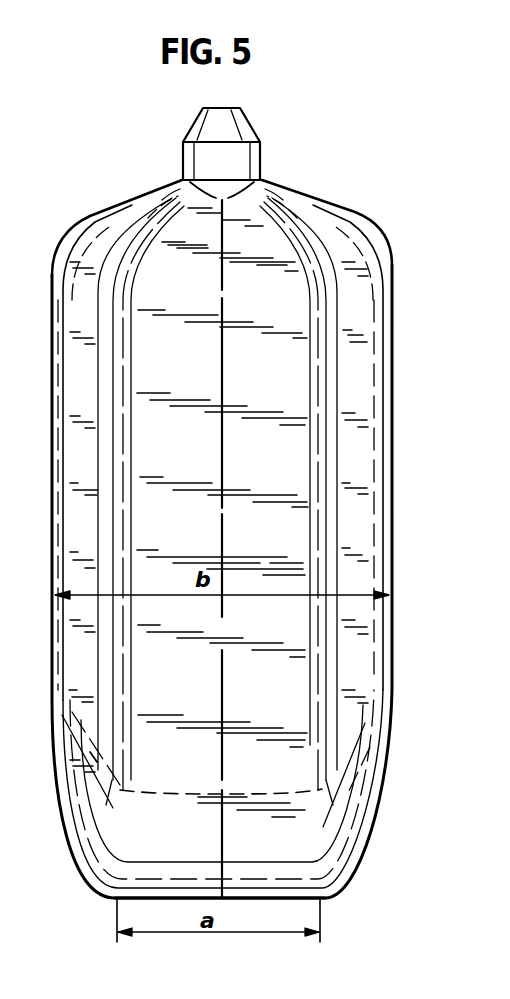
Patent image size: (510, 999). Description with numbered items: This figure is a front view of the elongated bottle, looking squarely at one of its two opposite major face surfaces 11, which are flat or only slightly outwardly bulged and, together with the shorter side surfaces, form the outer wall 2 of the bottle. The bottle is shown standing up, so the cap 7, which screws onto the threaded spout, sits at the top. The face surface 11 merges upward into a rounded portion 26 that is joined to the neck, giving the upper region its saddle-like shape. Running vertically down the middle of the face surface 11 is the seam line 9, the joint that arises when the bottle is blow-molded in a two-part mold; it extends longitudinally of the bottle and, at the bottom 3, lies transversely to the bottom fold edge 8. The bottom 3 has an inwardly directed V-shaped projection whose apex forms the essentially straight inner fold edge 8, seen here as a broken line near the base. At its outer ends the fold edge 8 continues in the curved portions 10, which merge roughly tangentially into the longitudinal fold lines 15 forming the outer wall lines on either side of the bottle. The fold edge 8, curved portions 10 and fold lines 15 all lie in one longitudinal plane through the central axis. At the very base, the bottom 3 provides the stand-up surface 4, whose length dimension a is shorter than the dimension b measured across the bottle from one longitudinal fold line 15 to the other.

The outer wall 2 is at (35, 505).
The bottom 3 is at (342, 903).
The stand-up surface 4 is at (115, 906).
The cap 7 is at (245, 155).
The inner fold edge 8 is at (212, 793).
The seam line 9 is at (221, 439).
The curved portions 10 is at (76, 742).
The major face surfaces 11 is at (282, 463).
The longitudinal fold lines 15 is at (51, 553).
The rounded portion 26 is at (112, 202).